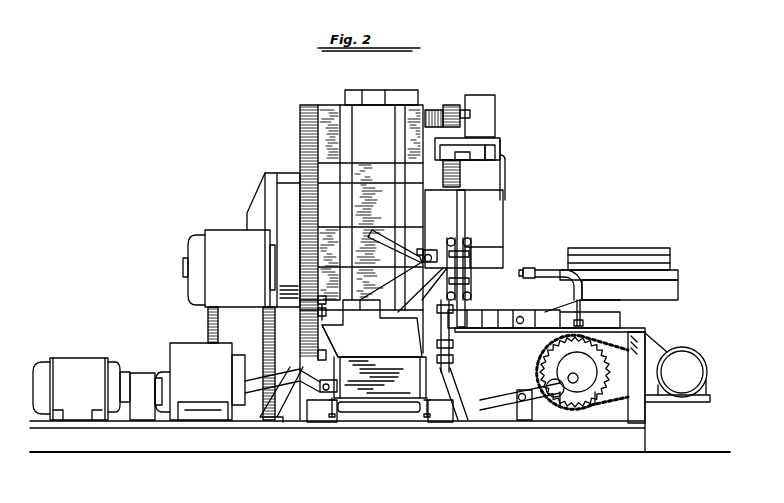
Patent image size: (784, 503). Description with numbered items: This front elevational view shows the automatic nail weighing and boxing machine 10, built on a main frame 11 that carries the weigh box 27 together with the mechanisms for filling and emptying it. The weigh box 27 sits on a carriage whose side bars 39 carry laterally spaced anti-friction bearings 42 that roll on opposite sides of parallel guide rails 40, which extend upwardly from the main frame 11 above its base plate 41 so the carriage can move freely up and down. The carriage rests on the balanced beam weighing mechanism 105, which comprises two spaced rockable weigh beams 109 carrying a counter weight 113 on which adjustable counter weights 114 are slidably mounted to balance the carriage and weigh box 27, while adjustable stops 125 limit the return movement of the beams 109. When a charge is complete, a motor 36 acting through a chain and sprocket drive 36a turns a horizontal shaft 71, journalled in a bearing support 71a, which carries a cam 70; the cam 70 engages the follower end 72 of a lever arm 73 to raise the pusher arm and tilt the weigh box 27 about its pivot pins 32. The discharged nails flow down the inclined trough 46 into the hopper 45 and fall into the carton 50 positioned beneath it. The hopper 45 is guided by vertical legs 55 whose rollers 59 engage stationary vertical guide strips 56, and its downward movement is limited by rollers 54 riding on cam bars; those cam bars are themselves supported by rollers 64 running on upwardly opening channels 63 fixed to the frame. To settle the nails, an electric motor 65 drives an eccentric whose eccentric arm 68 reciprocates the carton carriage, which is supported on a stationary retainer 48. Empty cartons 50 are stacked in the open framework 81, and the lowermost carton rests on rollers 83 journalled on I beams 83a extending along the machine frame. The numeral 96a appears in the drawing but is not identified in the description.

The automatic nail weighing and boxing machine 10 is at (515, 177).
The main frame 11 is at (510, 290).
The weigh box 27 is at (503, 218).
The pivot pins 32 is at (432, 249).
The motor 36 is at (690, 379).
The chain and sprocket drive 36a is at (606, 350).
The side bars 39 is at (472, 260).
The guide rails 40 is at (463, 218).
The base plate 41 is at (506, 330).
The anti-friction bearings 42 is at (469, 238).
The hopper 45 is at (393, 344).
The inclined trough 46 is at (406, 292).
The retainer 48 is at (618, 445).
The carton 50 is at (407, 92).
The rollers 54 is at (330, 340).
The vertical legs 55 is at (306, 326).
The vertical guide strips 56 is at (320, 298).
The rollers 59 is at (322, 308).
The upwardly opening channels 63 is at (338, 377).
The rollers 64 is at (320, 368).
The electric motor 65 is at (82, 392).
The eccentric arm 68 is at (246, 370).
The cam 70 is at (598, 364).
The horizontal shaft 71 is at (557, 370).
The bearing support 71a is at (590, 414).
The follower end 72 is at (573, 383).
The lever arm 73 is at (500, 398).
The open framework 81 is at (425, 118).
The rollers 83 is at (383, 412).
The I beams 83a is at (332, 420).
The motor 96a is at (243, 274).
The weighing mechanism 105 is at (690, 298).
The weigh beams 109 is at (560, 312).
The counter weight 113 is at (680, 275).
The counter weights 114 is at (672, 256).
The adjustable stops 125 is at (584, 314).